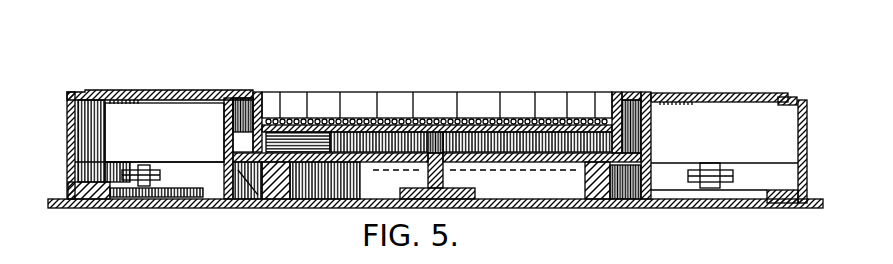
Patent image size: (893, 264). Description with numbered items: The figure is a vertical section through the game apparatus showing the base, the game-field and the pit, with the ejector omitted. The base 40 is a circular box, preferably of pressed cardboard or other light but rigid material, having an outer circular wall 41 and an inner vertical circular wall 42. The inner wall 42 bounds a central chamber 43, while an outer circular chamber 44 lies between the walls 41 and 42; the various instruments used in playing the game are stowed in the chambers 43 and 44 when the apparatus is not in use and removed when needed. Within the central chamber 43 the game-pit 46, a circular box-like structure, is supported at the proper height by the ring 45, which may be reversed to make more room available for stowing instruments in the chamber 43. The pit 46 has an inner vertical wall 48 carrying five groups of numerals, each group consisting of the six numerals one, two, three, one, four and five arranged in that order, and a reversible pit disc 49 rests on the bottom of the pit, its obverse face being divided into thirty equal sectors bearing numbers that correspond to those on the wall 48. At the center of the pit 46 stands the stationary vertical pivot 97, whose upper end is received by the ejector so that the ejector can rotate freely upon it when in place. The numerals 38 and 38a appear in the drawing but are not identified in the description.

The left housing casing 38 is at (130, 98).
The right housing casing 38a is at (800, 137).
The base 40 is at (163, 199).
The outer circular wall 41 is at (112, 141).
The inner vertical circular wall 42 is at (226, 143).
The central chamber 43 is at (238, 201).
The outer circular chamber 44 is at (164, 132).
The ring 45 is at (451, 180).
The game-pit 46 is at (254, 98).
The inner vertical wall 48 is at (507, 95).
The reversible pit disc 49 is at (556, 120).
The vertical pivot 97 is at (446, 176).